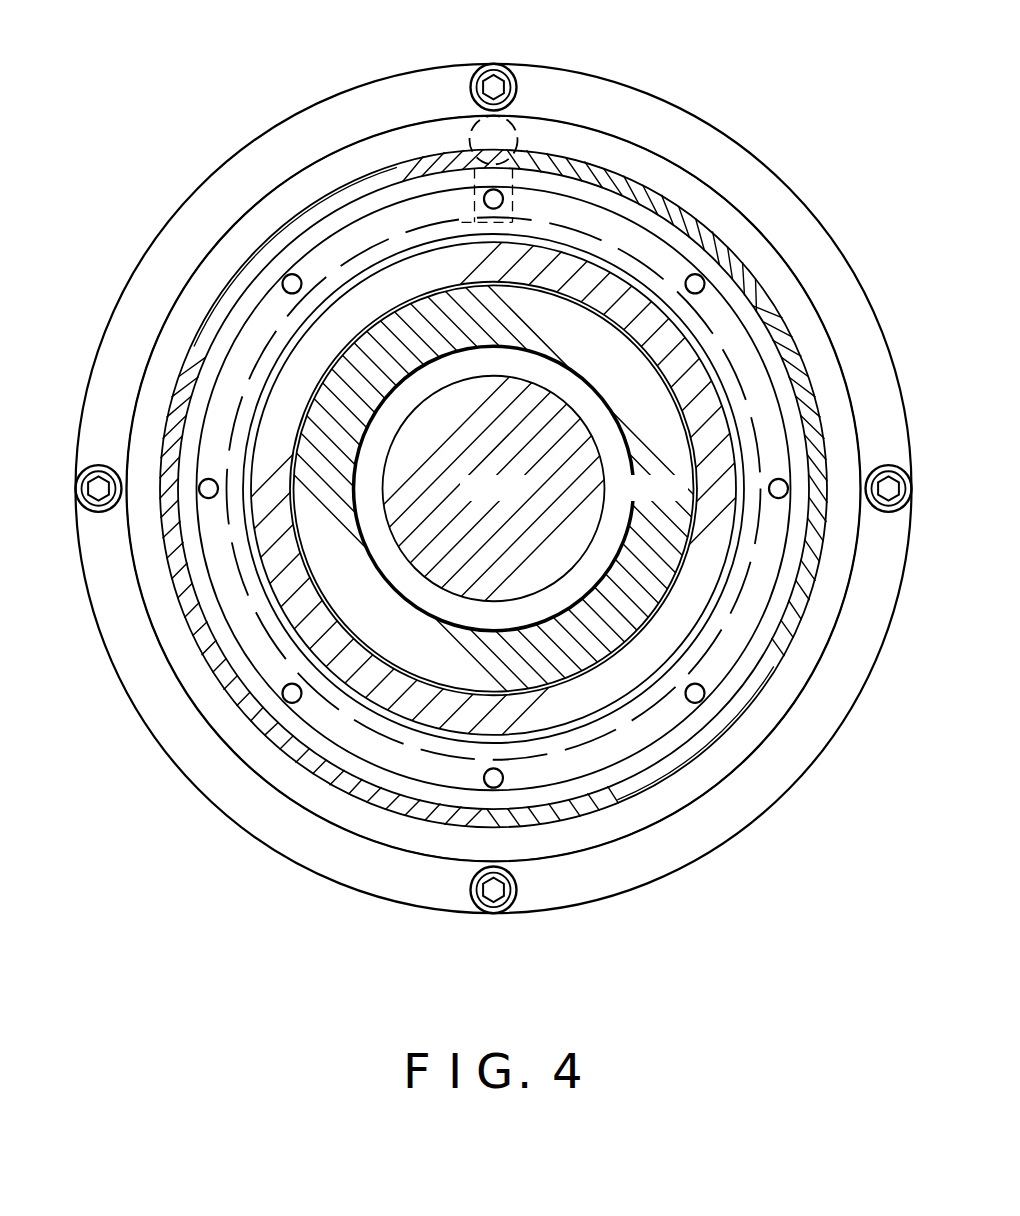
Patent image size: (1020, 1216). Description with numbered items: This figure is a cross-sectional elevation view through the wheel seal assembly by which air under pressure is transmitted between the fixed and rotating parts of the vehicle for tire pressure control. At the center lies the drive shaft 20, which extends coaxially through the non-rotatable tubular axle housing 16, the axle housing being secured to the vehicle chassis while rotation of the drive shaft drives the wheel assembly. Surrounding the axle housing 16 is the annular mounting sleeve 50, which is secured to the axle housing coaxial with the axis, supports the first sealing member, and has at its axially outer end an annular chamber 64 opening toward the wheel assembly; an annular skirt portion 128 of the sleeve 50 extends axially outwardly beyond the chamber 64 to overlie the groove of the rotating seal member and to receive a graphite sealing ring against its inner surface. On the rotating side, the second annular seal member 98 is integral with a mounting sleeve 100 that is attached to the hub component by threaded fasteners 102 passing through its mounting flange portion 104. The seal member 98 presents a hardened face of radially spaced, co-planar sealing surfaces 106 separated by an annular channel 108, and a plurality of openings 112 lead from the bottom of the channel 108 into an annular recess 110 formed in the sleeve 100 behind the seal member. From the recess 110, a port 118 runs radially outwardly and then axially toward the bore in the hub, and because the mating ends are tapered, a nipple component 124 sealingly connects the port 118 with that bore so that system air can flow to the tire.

The axle housing 16 is at (498, 488).
The drive shaft 20 is at (498, 489).
The mounting sleeve 50 is at (680, 620).
The annular chamber 64 is at (728, 220).
The second annular seal member 98 is at (688, 190).
The mounting sleeve 100 is at (303, 192).
The threaded fasteners 102 is at (504, 66).
The mounting flange portion 104 is at (215, 215).
The sealing surfaces 106 is at (765, 378).
The annular recess or channel 108 is at (728, 327).
The annular recess 110 is at (420, 225).
The openings 112 is at (501, 192).
The port 118 is at (528, 150).
The nipple component 124 is at (488, 136).
The annular skirt portion 128 is at (703, 740).